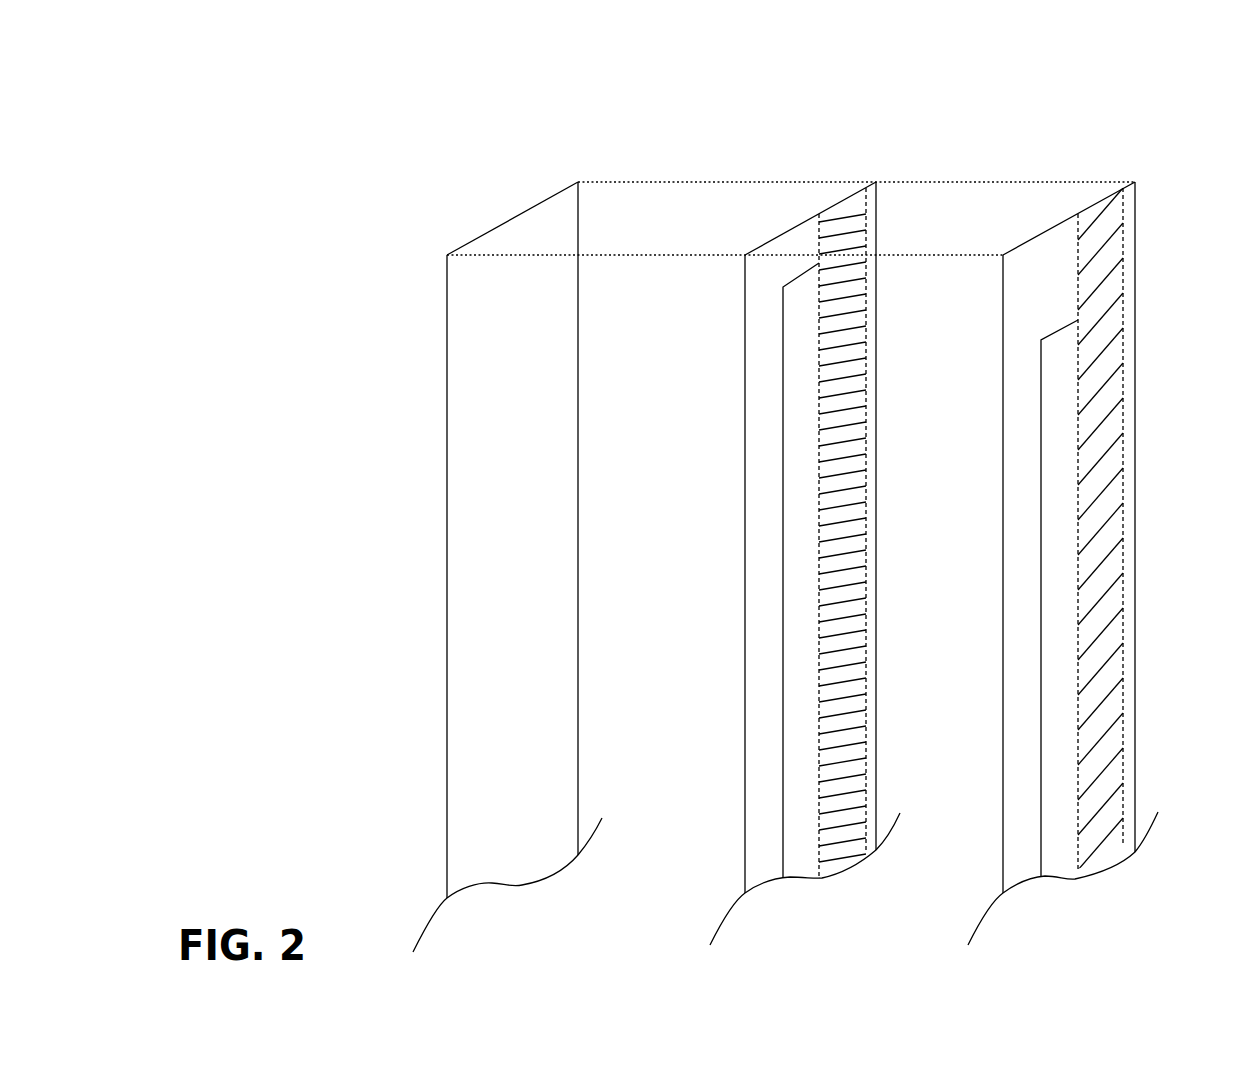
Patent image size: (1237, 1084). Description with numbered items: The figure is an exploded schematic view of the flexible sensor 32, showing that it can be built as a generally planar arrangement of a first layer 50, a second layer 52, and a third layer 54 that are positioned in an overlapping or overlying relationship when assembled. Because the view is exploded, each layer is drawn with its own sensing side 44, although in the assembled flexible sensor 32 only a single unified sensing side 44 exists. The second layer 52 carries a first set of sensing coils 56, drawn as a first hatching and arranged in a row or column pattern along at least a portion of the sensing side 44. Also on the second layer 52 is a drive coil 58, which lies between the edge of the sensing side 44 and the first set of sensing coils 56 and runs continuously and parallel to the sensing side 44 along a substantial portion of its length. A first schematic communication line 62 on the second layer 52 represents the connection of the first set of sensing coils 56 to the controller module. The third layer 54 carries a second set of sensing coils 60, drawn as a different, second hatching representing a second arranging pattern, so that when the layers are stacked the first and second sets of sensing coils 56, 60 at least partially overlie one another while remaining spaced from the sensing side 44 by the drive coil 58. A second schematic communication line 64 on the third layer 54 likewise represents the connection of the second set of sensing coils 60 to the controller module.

The flexible sensor 32 is at (830, 68).
The sensing side 44 is at (588, 385).
The first layer 50 is at (540, 203).
The second layer 52 is at (813, 217).
The third layer 54 is at (1062, 218).
The first set of sensing coils 56 is at (832, 346).
The drive coil 58 is at (870, 348).
The second set of sensing coils 60 is at (1105, 372).
The first schematic communication line 62 is at (783, 553).
The second schematic communication line 64 is at (1041, 533).